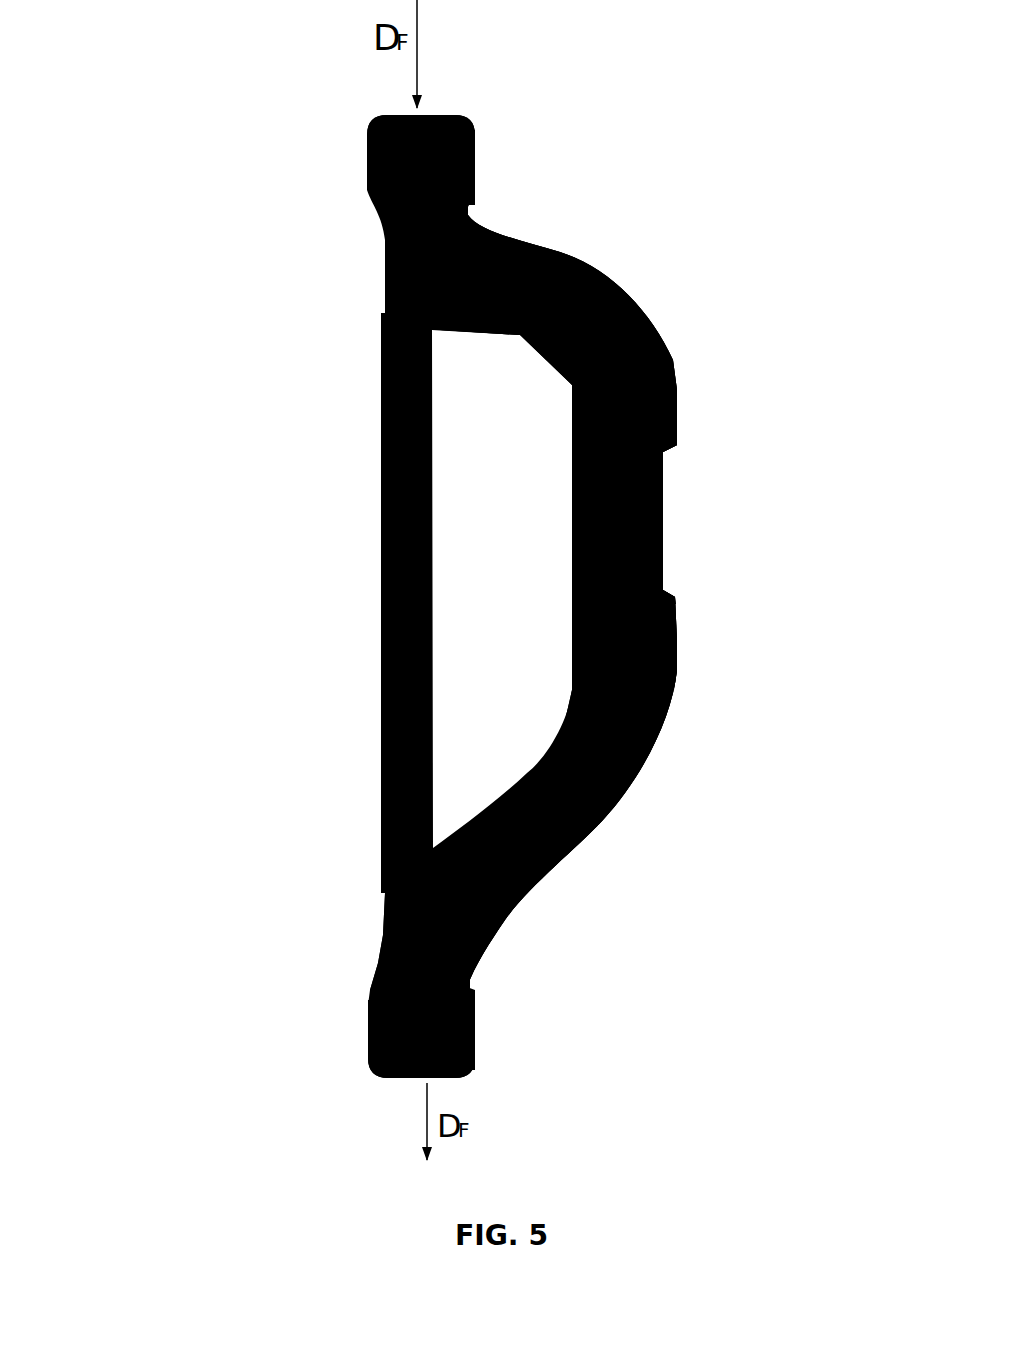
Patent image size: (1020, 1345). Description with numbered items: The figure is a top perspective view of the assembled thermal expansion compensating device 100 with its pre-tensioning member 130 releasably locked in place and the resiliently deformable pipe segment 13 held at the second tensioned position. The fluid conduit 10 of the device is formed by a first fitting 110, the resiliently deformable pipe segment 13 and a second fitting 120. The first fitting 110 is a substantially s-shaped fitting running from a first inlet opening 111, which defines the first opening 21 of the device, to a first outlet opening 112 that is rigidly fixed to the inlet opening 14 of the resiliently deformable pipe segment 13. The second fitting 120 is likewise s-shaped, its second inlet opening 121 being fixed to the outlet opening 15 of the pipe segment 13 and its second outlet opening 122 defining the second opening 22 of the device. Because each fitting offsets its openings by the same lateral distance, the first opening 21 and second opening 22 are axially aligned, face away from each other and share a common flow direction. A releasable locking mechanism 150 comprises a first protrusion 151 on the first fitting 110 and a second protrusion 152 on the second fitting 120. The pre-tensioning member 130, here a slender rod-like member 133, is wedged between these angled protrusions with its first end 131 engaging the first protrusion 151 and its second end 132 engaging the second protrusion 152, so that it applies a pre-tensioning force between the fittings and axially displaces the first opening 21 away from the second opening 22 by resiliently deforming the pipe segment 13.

The thermal expansion compensating device 100 is at (222, 150).
The fluid conduit 10 is at (675, 322).
The first fitting 110 is at (602, 195).
The first inlet opening 111 is at (482, 148).
The first outlet opening 112 is at (677, 408).
The inlet opening of the resiliently deformable pipe segment 14 is at (673, 447).
The resiliently deformable pipe segment 13 is at (667, 514).
The outlet opening of the resiliently deformable pipe segment 15 is at (672, 597).
The second inlet opening 121 is at (677, 670).
The second fitting 120 is at (592, 861).
The second outlet opening 122 is at (483, 1052).
The first opening 21 is at (450, 108).
The second opening 22 is at (417, 1085).
The pre-tensioning member 130 is at (372, 492).
The first end of the pre-tensioning member 131 is at (372, 332).
The second end of the pre-tensioning member 132 is at (375, 882).
The rod-like member 133 is at (377, 791).
The releasable locking mechanism 150 is at (375, 313).
The first protrusion 151 is at (375, 277).
The second protrusion 152 is at (375, 920).